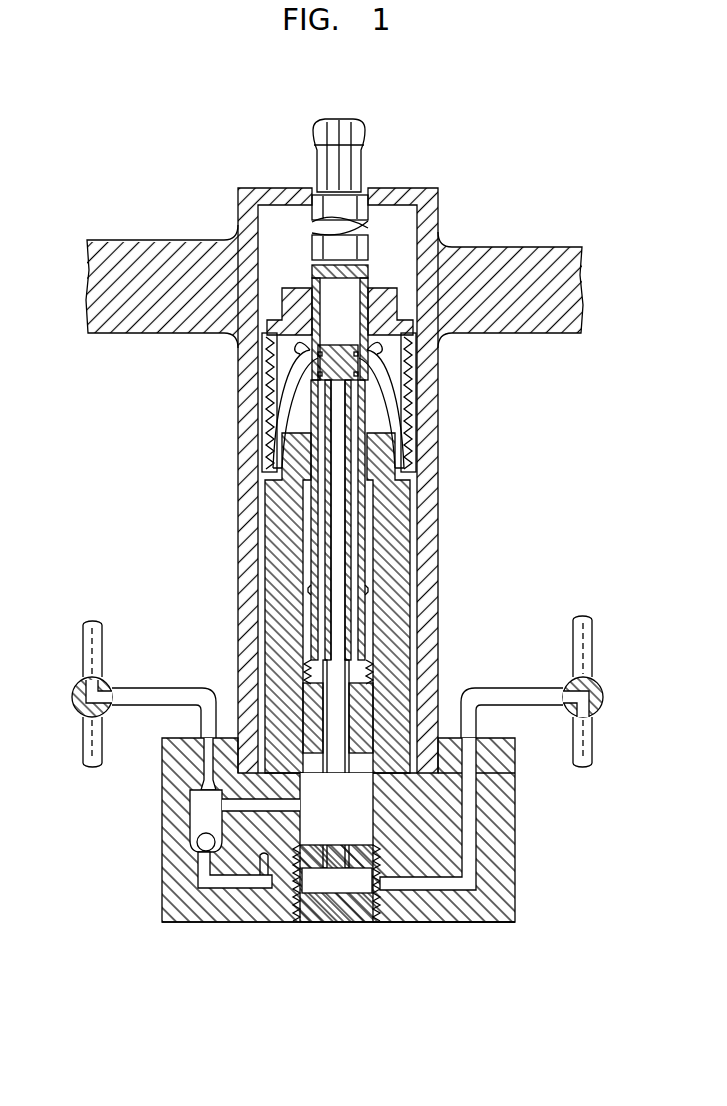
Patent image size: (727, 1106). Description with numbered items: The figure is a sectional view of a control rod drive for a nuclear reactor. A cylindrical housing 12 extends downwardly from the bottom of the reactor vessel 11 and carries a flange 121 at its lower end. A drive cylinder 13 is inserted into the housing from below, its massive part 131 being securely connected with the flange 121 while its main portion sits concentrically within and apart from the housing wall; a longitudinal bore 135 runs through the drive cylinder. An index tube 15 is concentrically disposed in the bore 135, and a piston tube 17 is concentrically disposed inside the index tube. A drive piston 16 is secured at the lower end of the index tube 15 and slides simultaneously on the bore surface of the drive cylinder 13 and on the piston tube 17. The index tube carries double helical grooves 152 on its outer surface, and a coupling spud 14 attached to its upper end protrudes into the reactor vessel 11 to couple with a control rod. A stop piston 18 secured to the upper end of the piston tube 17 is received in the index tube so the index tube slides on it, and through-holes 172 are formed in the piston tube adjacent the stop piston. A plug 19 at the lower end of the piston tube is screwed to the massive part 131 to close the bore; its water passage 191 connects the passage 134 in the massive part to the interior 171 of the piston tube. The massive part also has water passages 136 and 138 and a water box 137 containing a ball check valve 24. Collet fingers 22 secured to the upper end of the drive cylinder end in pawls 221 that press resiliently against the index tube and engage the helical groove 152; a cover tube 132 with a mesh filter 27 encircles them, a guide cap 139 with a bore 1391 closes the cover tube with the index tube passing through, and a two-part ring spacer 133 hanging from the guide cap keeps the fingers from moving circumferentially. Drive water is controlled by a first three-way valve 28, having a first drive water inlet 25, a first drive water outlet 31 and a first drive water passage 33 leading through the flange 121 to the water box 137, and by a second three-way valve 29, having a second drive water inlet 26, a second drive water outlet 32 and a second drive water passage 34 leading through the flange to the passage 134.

The reactor vessel 11 is at (186, 240).
The cylindrical housing 12 is at (256, 378).
The drive cylinder 13 is at (256, 560).
The coupling spud 14 is at (366, 130).
The index tube 15 is at (362, 626).
The drive piston 16 is at (370, 692).
The piston tube 17 is at (349, 522).
The stop piston 18 is at (408, 404).
The plug 19 is at (362, 920).
The collet fingers 22 is at (412, 384).
The ball check valve 24 is at (196, 842).
The first drive water inlet 25 is at (103, 642).
The second drive water inlet 26 is at (573, 655).
The mesh filter 27 is at (362, 385).
The first three-way valve 28 is at (76, 684).
The second three-way valve 29 is at (597, 690).
The first drive water outlet 31 is at (82, 742).
The second drive water outlet 32 is at (594, 749).
The first drive water passage 33 is at (150, 688).
The second drive water passage 34 is at (531, 708).
The flange 121 is at (511, 758).
The massive part 131 is at (175, 896).
The cover tube 132 is at (408, 437).
The ring spacer 133 is at (283, 372).
The water passage 134 is at (473, 818).
The bore 135 is at (443, 736).
The water passage 136 is at (274, 805).
The water box 137 is at (190, 806).
The water passage 138 is at (228, 885).
The guide cap 139 is at (382, 288).
The helical grooves 152 is at (311, 592).
The interior of the piston tube 171 is at (338, 566).
The through-holes 172 is at (366, 490).
The water passage 191 is at (337, 885).
The pawl 221 is at (266, 342).
The bore 1391 is at (408, 336).